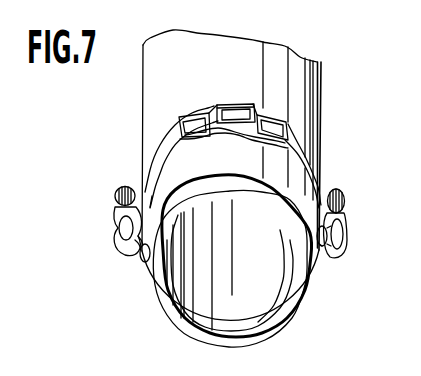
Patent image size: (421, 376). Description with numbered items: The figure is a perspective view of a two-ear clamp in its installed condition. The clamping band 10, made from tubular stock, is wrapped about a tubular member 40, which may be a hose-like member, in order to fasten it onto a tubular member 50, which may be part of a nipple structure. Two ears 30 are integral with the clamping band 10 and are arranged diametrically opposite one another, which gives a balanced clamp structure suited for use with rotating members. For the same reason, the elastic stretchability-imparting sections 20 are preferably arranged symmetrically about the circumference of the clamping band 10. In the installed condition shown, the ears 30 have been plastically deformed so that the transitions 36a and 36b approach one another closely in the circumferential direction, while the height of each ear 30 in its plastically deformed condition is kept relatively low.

The clamping band 10 is at (155, 128).
The elastic stretchability-imparting sections 20 is at (267, 105).
The ears 30 is at (106, 200).
The transition 36a is at (145, 258).
The transition 36b is at (150, 207).
The tubular member 40 is at (277, 337).
The tubular member 50 is at (187, 326).